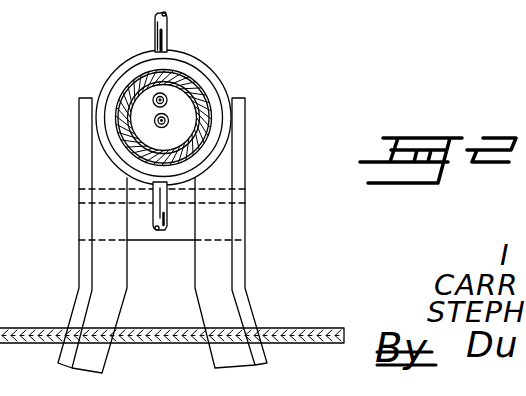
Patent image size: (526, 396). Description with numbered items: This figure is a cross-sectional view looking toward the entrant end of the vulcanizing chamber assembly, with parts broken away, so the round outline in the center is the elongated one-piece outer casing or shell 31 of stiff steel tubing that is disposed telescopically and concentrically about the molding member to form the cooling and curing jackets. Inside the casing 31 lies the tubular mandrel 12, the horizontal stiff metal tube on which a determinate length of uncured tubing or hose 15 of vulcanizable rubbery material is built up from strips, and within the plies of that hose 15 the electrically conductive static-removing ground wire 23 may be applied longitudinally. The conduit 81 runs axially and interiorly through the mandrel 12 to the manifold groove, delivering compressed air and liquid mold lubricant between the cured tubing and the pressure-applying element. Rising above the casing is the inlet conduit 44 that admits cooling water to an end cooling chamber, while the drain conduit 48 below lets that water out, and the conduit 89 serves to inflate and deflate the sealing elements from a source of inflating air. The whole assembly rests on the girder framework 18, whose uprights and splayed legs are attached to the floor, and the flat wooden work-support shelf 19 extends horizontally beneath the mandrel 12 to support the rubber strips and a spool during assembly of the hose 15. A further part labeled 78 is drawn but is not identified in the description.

The tubular mandrel 12 is at (193, 90).
The tubing or hose 15 is at (127, 140).
The girder framework 18 is at (228, 299).
The work-support shelf 19 is at (313, 328).
The ground wire 23 is at (206, 118).
The outer casing or shell 31 is at (147, 57).
The inlet conduit 44 is at (155, 20).
The drain conduit 48 is at (168, 221).
The bolt 78 is at (154, 118).
The conduit 81 is at (152, 98).
The conduit 89 is at (163, 36).